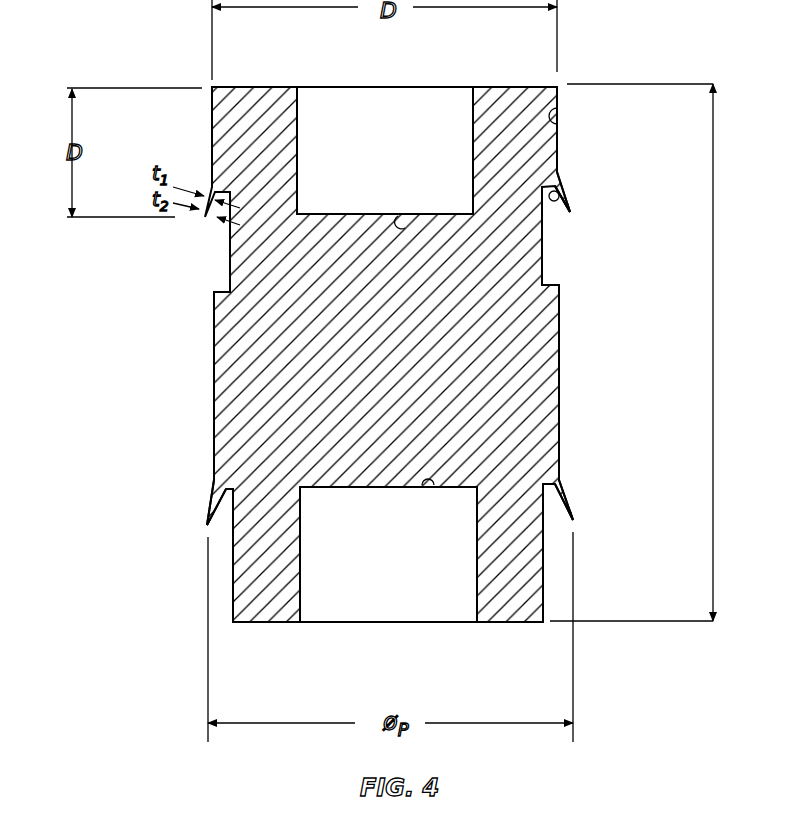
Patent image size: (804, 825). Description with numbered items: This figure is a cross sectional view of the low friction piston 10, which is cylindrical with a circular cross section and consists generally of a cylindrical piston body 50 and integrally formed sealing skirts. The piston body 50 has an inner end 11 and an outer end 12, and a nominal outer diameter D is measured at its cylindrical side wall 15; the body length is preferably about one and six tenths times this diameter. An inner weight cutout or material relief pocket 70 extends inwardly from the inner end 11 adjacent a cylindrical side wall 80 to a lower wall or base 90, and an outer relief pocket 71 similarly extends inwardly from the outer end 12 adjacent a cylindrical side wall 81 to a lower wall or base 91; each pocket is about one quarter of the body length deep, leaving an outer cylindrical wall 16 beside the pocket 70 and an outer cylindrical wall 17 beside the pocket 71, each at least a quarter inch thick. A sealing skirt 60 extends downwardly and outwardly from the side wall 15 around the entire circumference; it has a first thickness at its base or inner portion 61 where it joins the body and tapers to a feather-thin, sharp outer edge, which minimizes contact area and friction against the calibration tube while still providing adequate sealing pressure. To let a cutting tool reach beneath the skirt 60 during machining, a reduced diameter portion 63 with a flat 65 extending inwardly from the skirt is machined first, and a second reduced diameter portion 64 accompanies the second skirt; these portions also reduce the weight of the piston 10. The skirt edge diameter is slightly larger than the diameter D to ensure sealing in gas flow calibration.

The low friction piston 10 is at (108, 436).
The inner end 11 is at (287, 622).
The outer end 12 is at (530, 83).
The cylindrical side wall 15 is at (557, 123).
The outer cylindrical wall 16 is at (535, 612).
The outer cylindrical wall 17 is at (488, 100).
The piston body 50 is at (213, 316).
The sealing skirt 60 is at (595, 172).
The base or inner portion 61 is at (570, 200).
The reduced diameter portion 63 is at (542, 262).
The second reduced diameter portion 64 is at (543, 558).
The flat 65 is at (549, 200).
The inner weight cutout or material relief pocket 70 is at (398, 564).
The outer weight cutout or material relief pocket 71 is at (406, 162).
The cylindrical side wall 80 is at (480, 597).
The cylindrical side wall 81 is at (298, 128).
The lower wall or base 90 is at (422, 485).
The lower wall or base 91 is at (405, 228).